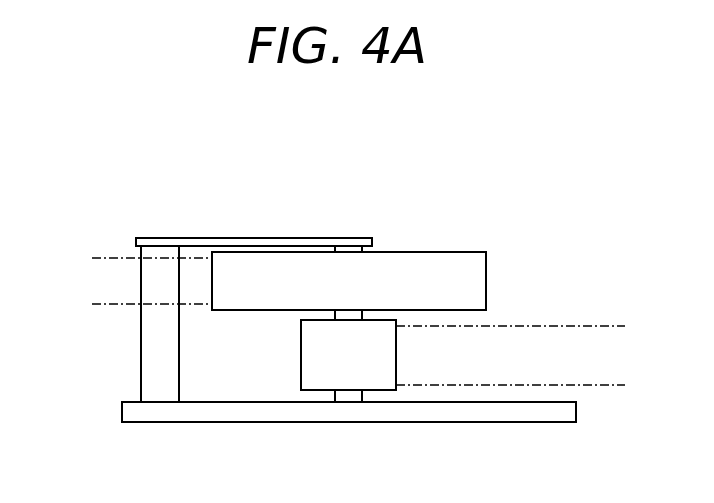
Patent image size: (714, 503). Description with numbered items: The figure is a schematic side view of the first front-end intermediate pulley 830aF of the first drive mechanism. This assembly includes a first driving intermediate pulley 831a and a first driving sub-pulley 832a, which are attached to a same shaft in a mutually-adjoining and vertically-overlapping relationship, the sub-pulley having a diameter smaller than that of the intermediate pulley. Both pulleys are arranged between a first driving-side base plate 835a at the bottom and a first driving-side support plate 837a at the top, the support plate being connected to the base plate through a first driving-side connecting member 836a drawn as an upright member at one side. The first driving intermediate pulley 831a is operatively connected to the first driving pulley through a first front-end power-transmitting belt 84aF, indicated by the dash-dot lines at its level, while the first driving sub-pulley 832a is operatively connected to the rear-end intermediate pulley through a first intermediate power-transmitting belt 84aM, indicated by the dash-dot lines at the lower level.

The first front-end intermediate pulley 830aF is at (349, 198).
The first driving-side support plate 837a is at (228, 238).
The first driving-side connecting member 836a is at (141, 377).
The first driving intermediate pulley 831a is at (486, 281).
The first driving sub-pulley 832a is at (396, 353).
The first driving-side base plate 835a is at (222, 422).
The first front-end power-transmitting belt 84aF is at (105, 304).
The first intermediate power-transmitting belt 84aM is at (597, 386).